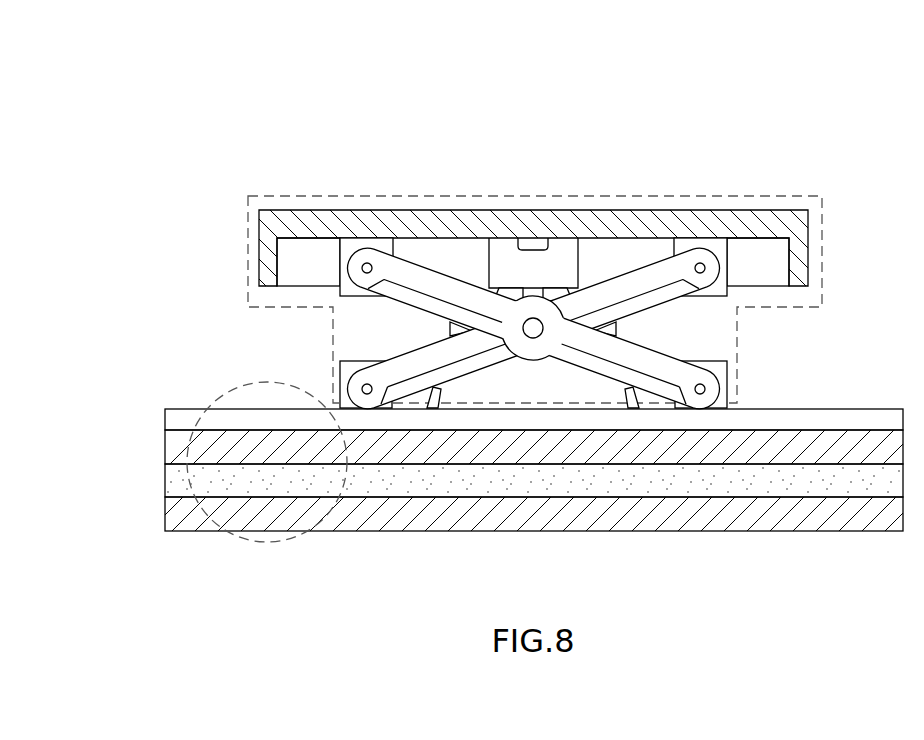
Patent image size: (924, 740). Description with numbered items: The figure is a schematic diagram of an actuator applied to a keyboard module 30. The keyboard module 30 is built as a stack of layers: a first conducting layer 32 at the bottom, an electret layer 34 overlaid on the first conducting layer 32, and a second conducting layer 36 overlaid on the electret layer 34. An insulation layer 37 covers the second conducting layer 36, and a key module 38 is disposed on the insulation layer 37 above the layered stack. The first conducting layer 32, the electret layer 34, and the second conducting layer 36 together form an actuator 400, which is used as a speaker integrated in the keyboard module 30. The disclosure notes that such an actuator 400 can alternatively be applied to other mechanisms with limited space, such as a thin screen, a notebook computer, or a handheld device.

The keyboard module 30 is at (322, 122).
The key module 38 is at (822, 248).
The insulation layer 37 is at (165, 418).
The second conducting layer 36 is at (165, 447).
The electret layer 34 is at (165, 487).
The first conducting layer 32 is at (165, 512).
The actuator 400 is at (237, 543).